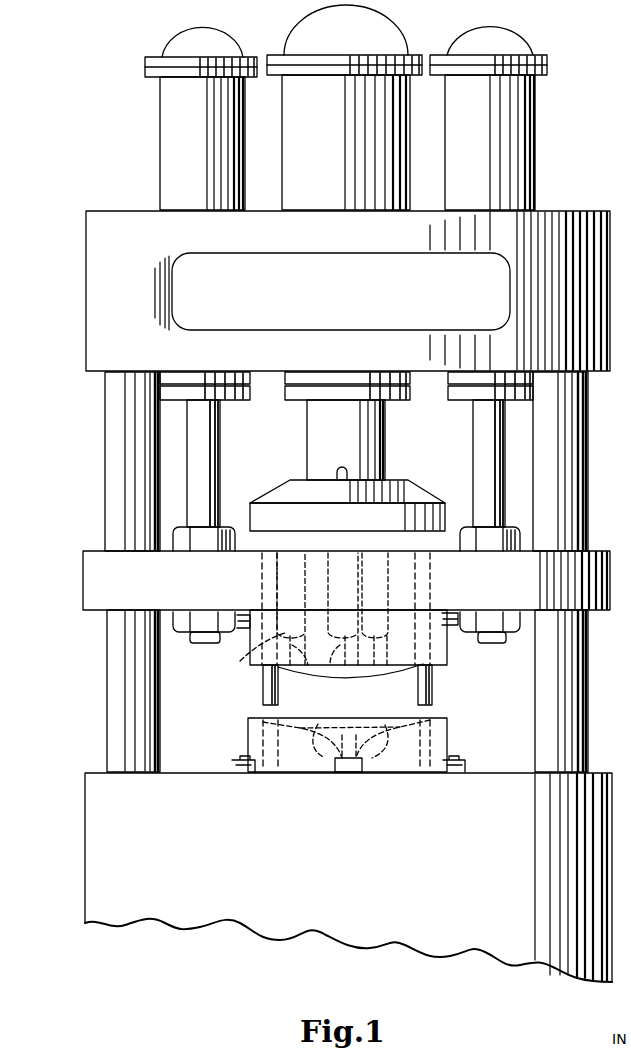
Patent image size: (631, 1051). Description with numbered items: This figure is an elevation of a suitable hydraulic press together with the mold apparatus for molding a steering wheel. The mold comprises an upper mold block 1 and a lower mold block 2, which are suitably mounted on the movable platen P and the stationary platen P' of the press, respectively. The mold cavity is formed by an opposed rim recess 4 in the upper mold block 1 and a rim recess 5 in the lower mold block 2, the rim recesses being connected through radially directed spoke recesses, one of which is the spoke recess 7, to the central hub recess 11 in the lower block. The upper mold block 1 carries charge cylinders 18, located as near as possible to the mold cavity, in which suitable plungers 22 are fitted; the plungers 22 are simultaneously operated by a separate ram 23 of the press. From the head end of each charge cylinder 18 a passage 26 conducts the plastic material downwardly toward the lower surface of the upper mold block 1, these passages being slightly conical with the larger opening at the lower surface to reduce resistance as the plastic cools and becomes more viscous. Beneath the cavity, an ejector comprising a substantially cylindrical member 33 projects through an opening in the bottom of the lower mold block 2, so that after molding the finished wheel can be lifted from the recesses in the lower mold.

The ram 23 is at (385, 428).
The plungers 22 is at (282, 542).
The movable platen P is at (331, 580).
The stationary platen P' is at (326, 877).
The charge cylinders 18 is at (263, 652).
The upper mold block 1 is at (440, 650).
The rim recess 4 is at (433, 666).
The passage 26 is at (320, 676).
The central hub recess 11 is at (330, 717).
The spoke recess 7 is at (395, 723).
The rim recess 5 is at (437, 718).
The lower mold block 2 is at (438, 742).
The cylindrical member 33 is at (347, 767).